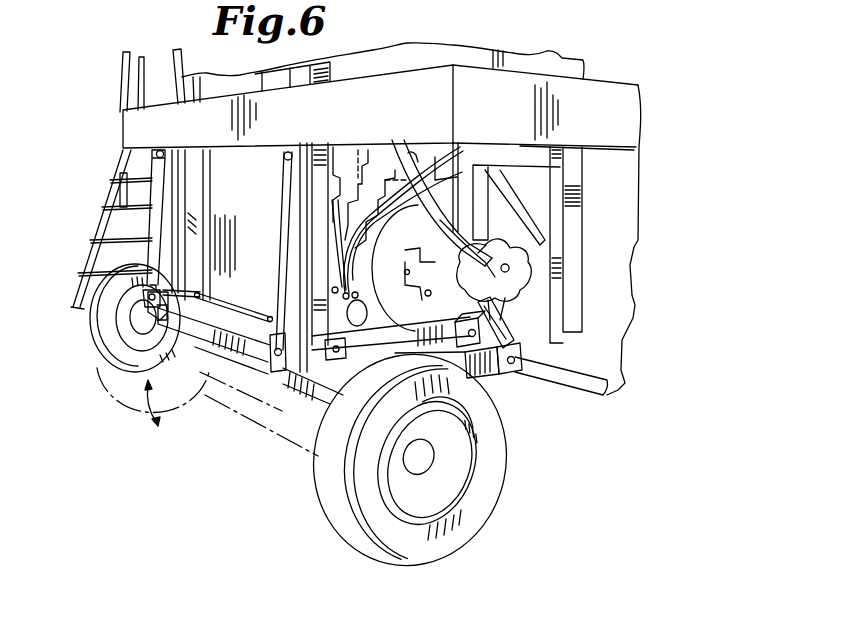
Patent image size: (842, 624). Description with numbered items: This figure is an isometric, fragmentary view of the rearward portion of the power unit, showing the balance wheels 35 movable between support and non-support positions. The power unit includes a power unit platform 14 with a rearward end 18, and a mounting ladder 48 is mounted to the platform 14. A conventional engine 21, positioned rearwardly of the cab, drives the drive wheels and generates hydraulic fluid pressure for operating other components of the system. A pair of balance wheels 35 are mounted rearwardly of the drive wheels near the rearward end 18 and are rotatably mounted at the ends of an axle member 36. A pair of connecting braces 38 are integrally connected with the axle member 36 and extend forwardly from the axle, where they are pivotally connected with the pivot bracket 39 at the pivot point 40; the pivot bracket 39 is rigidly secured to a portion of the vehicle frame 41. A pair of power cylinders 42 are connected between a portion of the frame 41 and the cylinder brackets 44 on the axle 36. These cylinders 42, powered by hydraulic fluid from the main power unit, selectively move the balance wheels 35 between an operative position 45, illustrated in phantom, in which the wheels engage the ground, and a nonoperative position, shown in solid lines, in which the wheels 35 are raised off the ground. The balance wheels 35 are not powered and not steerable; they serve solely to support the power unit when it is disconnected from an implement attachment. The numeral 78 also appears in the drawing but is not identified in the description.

The power unit platform 14 is at (618, 80).
The rearward end 18 is at (167, 117).
The engine 21 is at (440, 197).
The balance wheel 35 is at (127, 292).
The axle member 36 is at (252, 365).
The connecting brace 38 is at (505, 380).
The pivot bracket 39 is at (612, 388).
The pivot point 40 is at (515, 368).
The vehicle frame 41 is at (325, 193).
The power cylinder 42 is at (110, 209).
The cylinder bracket 44 is at (160, 310).
The operative position 45 is at (117, 433).
The mounting ladder 48 is at (113, 188).
The conduit 78 is at (513, 0).